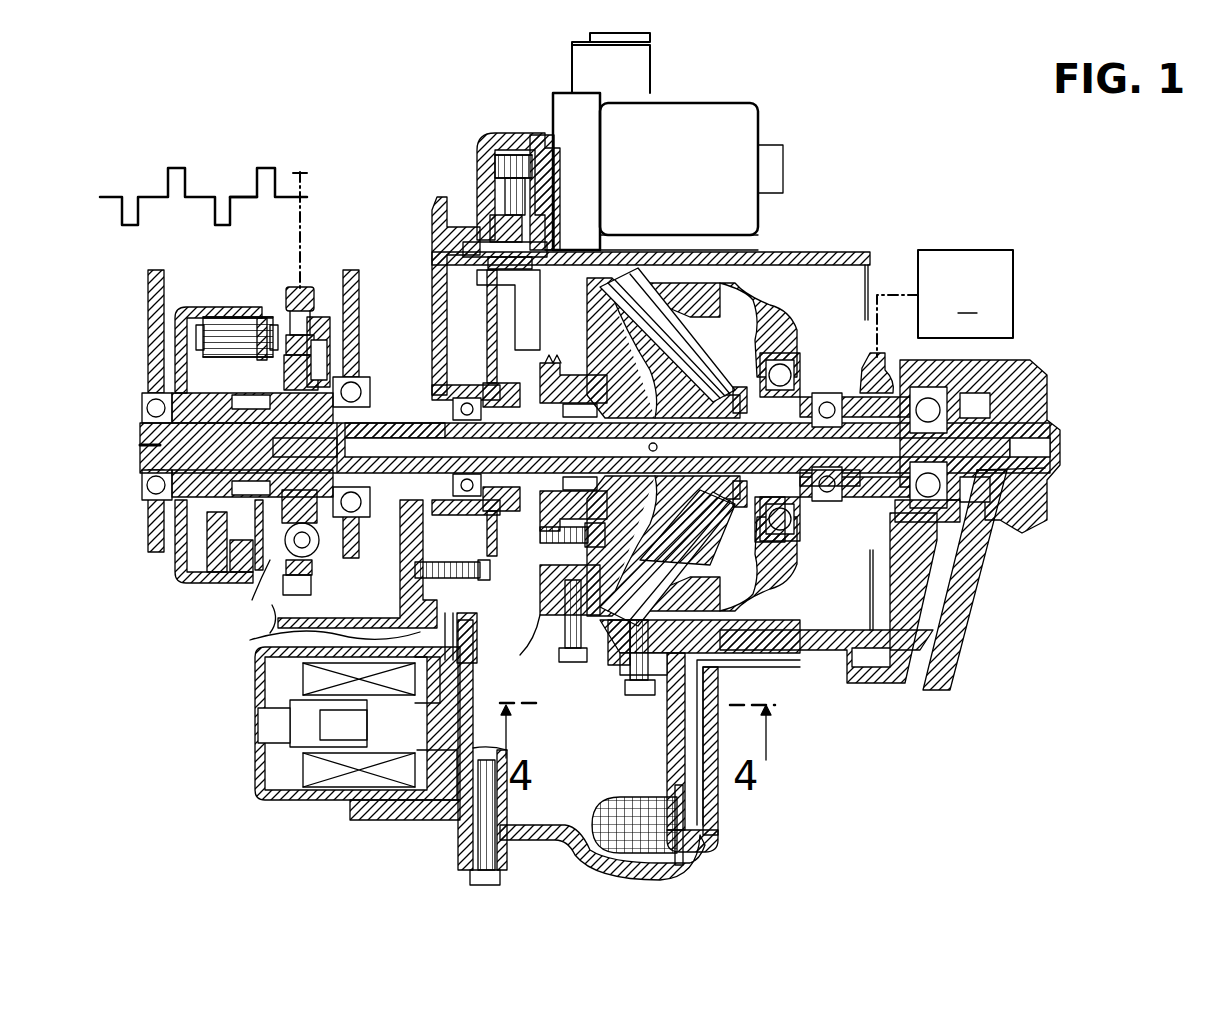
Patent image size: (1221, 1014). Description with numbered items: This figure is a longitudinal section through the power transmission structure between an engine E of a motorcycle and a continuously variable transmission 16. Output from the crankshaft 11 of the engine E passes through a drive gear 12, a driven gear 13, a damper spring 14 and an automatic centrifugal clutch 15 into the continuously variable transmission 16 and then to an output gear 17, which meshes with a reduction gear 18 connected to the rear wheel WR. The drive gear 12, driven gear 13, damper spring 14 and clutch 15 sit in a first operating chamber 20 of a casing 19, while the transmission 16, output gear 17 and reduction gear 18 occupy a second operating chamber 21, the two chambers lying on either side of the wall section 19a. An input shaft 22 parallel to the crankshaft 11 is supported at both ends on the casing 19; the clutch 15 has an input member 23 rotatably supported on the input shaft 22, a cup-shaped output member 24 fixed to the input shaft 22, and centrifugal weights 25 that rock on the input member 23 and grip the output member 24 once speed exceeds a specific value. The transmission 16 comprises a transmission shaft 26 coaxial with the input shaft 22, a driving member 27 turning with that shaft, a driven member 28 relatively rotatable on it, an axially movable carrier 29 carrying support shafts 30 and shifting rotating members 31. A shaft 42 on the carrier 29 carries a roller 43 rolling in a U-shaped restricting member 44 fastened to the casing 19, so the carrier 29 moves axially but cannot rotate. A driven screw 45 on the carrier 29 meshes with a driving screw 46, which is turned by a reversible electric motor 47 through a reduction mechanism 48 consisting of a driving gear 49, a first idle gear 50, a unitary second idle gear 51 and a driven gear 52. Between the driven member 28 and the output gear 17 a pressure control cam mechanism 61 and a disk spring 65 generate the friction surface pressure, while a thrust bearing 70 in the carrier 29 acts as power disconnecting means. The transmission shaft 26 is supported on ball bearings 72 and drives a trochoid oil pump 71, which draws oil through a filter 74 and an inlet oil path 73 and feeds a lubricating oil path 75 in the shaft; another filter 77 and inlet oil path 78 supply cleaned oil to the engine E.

The engine E is at (176, 155).
The crankshaft 11 is at (243, 197).
The drive gear 12 is at (302, 175).
The driven gear 13 is at (297, 290).
The damper spring 14 is at (292, 555).
The automatic centrifugal clutch 15 is at (186, 590).
The continuously variable transmission 16 is at (738, 298).
The output gear 17 is at (880, 553).
The reduction gear 18 is at (868, 385).
The casing 19 is at (783, 673).
The wall section 19a is at (440, 280).
The first operating chamber 20 is at (374, 596).
The second operating chamber 21 is at (812, 614).
The input shaft 22 is at (143, 457).
The input member 23 is at (330, 330).
The output member 24 is at (178, 328).
The centrifugal weights 25 is at (228, 330).
The transmission shaft 26 is at (392, 432).
The driving member 27 is at (620, 320).
The driven member 28 is at (740, 312).
The carrier 29 is at (638, 263).
The support shafts 30 is at (687, 537).
The shifting rotating members 31 is at (700, 320).
The shaft 42 is at (573, 660).
The roller 43 is at (553, 620).
The restricting member 44 is at (617, 677).
The driven screw 45 is at (500, 387).
The driving screw 46 is at (552, 545).
The electric motor 47 is at (706, 188).
The reduction mechanism 48 is at (505, 178).
The driving gear 49 is at (494, 215).
The first idle gear 50 is at (520, 190).
The second idle gear 51 is at (480, 198).
The driven gear 52 is at (505, 342).
The pressure control cam mechanism 61 is at (790, 358).
The disk spring 65 is at (778, 545).
The thrust bearing 70 is at (822, 492).
The oil pump 71 is at (997, 405).
The ball bearings 72 is at (920, 523).
The inlet oil path 73 is at (1010, 520).
The filter 74 is at (627, 797).
The lubricating oil path 75 is at (1003, 448).
The filter 77 is at (252, 727).
The inlet oil path 78 is at (453, 667).
The rear wheel WR is at (945, 303).